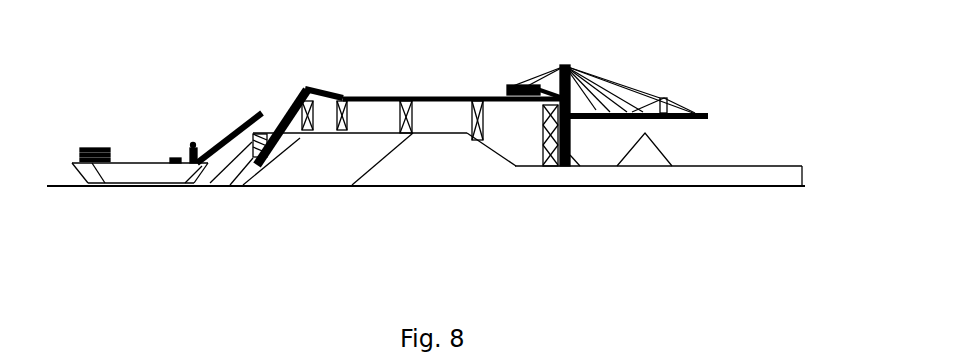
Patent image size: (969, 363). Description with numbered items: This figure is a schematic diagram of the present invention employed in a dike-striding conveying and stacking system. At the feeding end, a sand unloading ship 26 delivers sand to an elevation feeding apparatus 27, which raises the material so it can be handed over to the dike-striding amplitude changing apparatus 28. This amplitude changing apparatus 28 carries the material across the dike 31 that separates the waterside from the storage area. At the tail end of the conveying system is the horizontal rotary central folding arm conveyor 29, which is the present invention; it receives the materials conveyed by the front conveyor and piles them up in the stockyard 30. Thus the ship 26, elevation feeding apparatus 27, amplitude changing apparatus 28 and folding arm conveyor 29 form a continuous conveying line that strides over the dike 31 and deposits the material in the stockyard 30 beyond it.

The sand unloading ship 26 is at (222, 148).
The elevation feeding apparatus 27 is at (297, 90).
The dike-striding amplitude changing apparatus 28 is at (327, 87).
The horizontal rotary central folding arm conveyor 29 is at (613, 89).
The stockyard 30 is at (712, 165).
The dike 31 is at (407, 158).